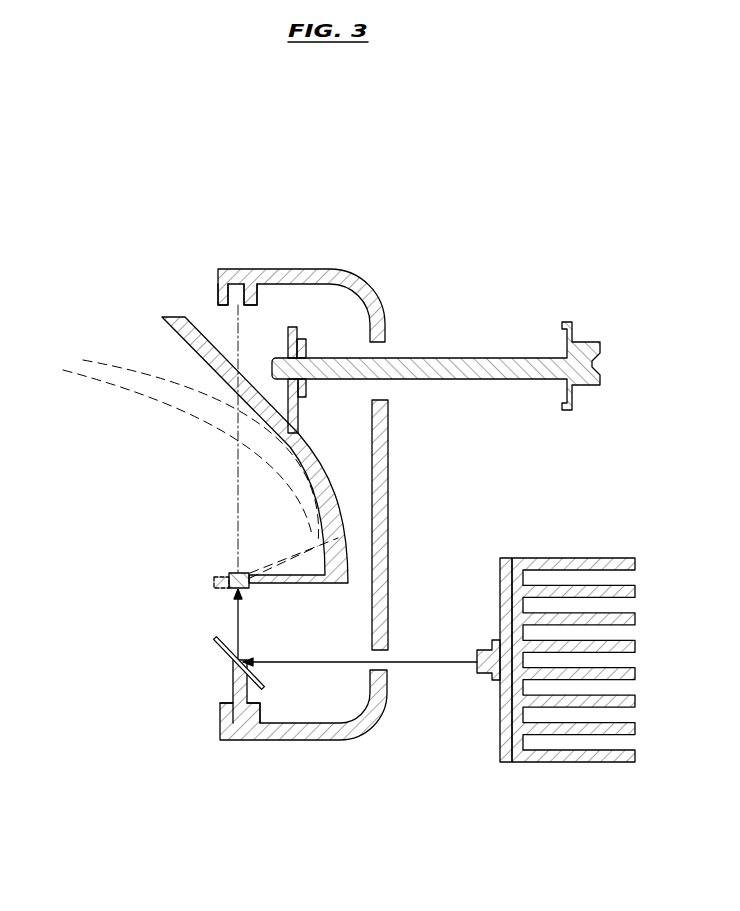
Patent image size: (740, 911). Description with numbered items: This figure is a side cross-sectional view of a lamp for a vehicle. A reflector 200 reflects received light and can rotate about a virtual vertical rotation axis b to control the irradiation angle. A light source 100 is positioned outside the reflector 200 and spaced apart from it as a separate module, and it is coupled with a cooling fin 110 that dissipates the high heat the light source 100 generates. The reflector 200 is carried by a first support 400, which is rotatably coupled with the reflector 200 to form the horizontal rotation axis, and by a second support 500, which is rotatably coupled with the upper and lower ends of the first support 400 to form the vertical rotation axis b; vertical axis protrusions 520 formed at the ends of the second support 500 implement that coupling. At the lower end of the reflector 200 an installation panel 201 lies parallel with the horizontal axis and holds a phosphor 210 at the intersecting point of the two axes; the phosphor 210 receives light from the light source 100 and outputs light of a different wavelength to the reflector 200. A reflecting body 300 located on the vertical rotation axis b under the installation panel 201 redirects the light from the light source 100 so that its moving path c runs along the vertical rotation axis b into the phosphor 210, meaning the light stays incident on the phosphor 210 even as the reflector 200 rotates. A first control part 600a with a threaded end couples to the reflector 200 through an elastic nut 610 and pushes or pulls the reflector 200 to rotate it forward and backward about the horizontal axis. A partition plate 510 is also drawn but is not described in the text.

The light source 100 is at (485, 650).
The cooling fin 110 is at (575, 558).
The reflector 200 is at (159, 338).
The installation panel 201 is at (226, 582).
The phosphor 210 is at (238, 572).
The reflecting body 300 is at (215, 642).
The first support 400 is at (264, 286).
The second support 500 is at (322, 268).
The partition plate 510 is at (385, 662).
The vertical axis protrusion 520 is at (232, 702).
The first control part 600a is at (508, 358).
The nut 610 is at (306, 348).
The vertical rotation axis b is at (238, 462).
The moving path c is at (422, 660).